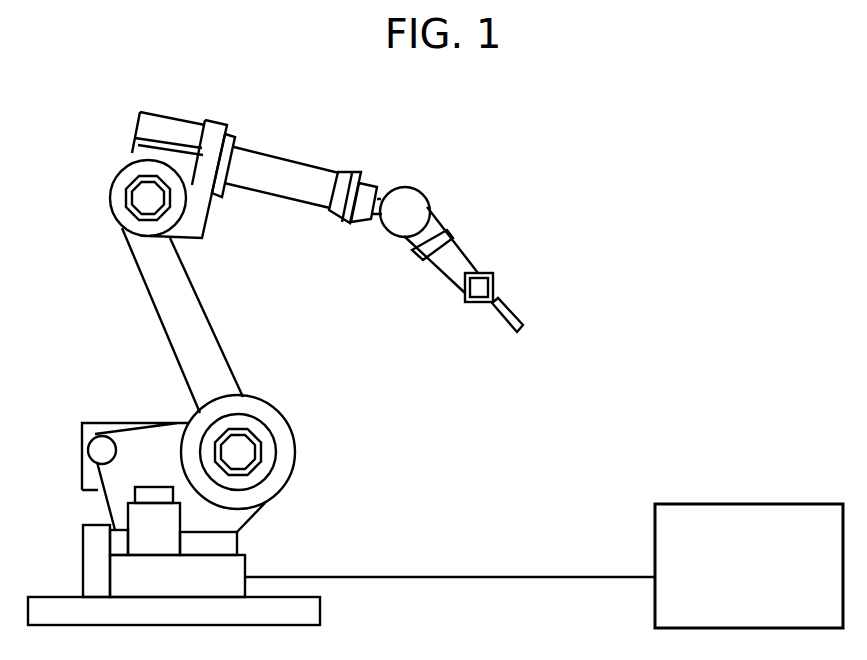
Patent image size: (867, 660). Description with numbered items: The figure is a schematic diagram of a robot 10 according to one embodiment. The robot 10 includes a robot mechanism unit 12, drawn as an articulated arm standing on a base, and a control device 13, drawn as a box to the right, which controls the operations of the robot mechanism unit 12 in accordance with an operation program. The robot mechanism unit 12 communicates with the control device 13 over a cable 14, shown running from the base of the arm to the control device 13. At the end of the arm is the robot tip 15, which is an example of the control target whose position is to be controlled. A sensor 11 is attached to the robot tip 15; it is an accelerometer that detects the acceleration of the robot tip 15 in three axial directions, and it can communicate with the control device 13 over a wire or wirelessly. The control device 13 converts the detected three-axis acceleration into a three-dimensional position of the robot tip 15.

The robot 10 is at (664, 199).
The sensor 11 is at (486, 288).
The robot mechanism unit 12 is at (140, 307).
The control device 13 is at (778, 504).
The cable 14 is at (463, 577).
The robot tip 15 is at (523, 307).